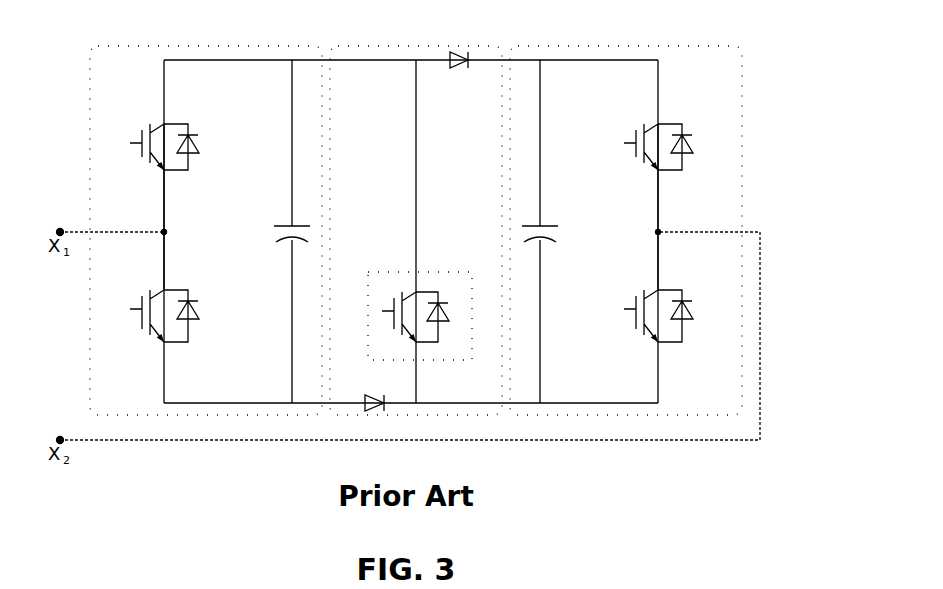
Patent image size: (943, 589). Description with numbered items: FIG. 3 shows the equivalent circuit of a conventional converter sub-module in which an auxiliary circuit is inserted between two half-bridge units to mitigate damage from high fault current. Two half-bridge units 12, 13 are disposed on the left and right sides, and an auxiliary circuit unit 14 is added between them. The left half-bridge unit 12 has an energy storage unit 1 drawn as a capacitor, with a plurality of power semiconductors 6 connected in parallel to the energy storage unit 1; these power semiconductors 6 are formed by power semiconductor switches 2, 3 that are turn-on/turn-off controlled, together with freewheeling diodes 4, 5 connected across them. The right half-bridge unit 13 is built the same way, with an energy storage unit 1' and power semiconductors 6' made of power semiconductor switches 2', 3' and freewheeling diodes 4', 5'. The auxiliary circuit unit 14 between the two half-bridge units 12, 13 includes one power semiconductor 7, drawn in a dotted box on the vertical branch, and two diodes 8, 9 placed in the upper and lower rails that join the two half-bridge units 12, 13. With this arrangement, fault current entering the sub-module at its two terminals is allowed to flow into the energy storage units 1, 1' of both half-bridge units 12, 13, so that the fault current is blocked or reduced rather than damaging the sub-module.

The energy storage unit 1 is at (284, 231).
The energy storage unit 1' is at (549, 231).
The power semiconductor switch 2 is at (144, 132).
The power semiconductor switch 2' is at (639, 131).
The power semiconductor switch 3 is at (144, 304).
The power semiconductor switch 3' is at (635, 328).
The freewheeling diode 4 is at (204, 147).
The freewheeling diode 4' is at (680, 162).
The freewheeling diode 5 is at (204, 316).
The freewheeling diode 5' is at (680, 330).
The power semiconductors 6 is at (194, 207).
The power semiconductors 6' is at (628, 207).
The power semiconductor 7 is at (434, 272).
The diode 8 is at (466, 53).
The diode 9 is at (378, 414).
The half-bridge unit 12 is at (207, 46).
The half-bridge unit 13 is at (626, 46).
The auxiliary circuit unit 14 is at (392, 46).